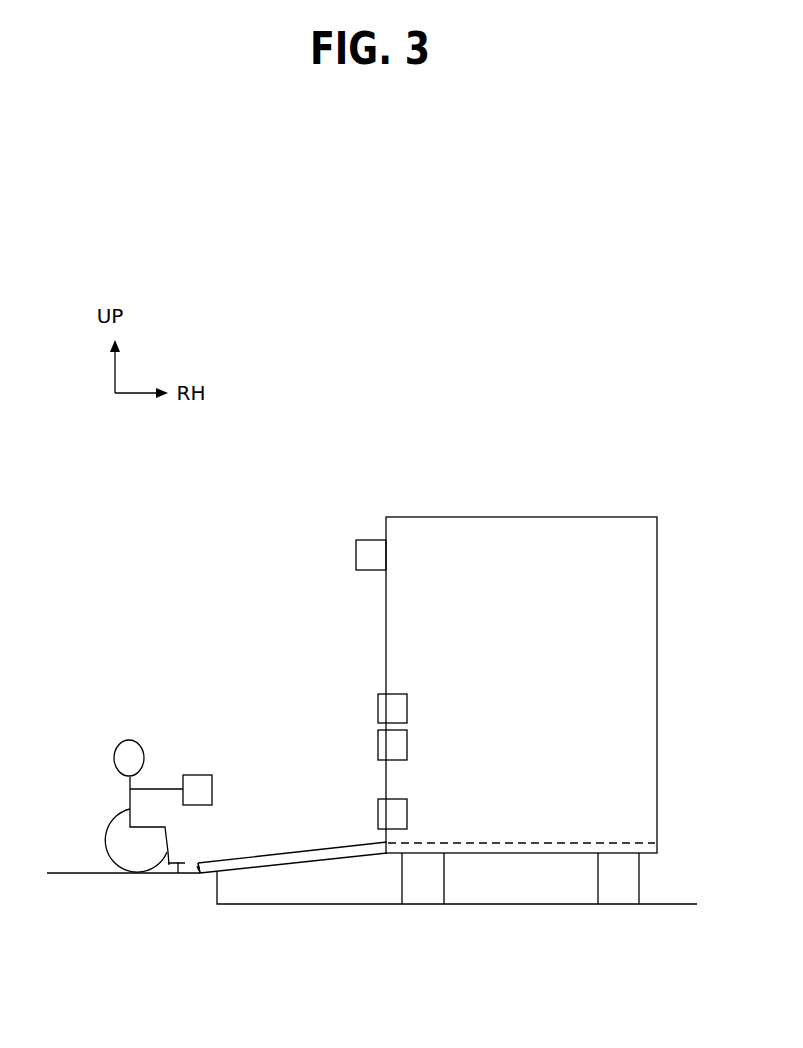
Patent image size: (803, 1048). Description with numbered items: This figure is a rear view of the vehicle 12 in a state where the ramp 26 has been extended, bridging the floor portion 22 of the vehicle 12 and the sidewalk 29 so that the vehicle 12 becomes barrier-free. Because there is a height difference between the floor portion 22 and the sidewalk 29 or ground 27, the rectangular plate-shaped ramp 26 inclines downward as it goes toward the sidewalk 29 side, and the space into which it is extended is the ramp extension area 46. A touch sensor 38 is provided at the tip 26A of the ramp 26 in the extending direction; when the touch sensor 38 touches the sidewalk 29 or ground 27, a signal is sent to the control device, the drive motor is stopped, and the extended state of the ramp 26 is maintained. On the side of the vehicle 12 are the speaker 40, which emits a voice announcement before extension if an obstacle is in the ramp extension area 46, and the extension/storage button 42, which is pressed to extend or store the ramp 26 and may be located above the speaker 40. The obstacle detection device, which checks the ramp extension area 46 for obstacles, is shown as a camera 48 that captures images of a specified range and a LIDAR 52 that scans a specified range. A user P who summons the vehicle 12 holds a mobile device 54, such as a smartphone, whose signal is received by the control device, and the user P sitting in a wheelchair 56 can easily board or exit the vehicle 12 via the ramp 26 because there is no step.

The vehicle 12 is at (613, 481).
The floor portion 22 is at (561, 843).
The ramp 26 is at (328, 858).
The tip of the ramp 26A is at (200, 870).
The ground 27 is at (292, 898).
The sidewalk 29 is at (80, 873).
The touch sensor 38 is at (197, 868).
The speaker 40 is at (393, 742).
The extension/storage button 42 is at (393, 707).
The ramp extension area 46 is at (178, 862).
The camera 48 is at (365, 552).
The LIDAR 52 is at (393, 814).
The mobile device 54 is at (196, 786).
The wheelchair 56 is at (110, 833).
The user P is at (130, 750).